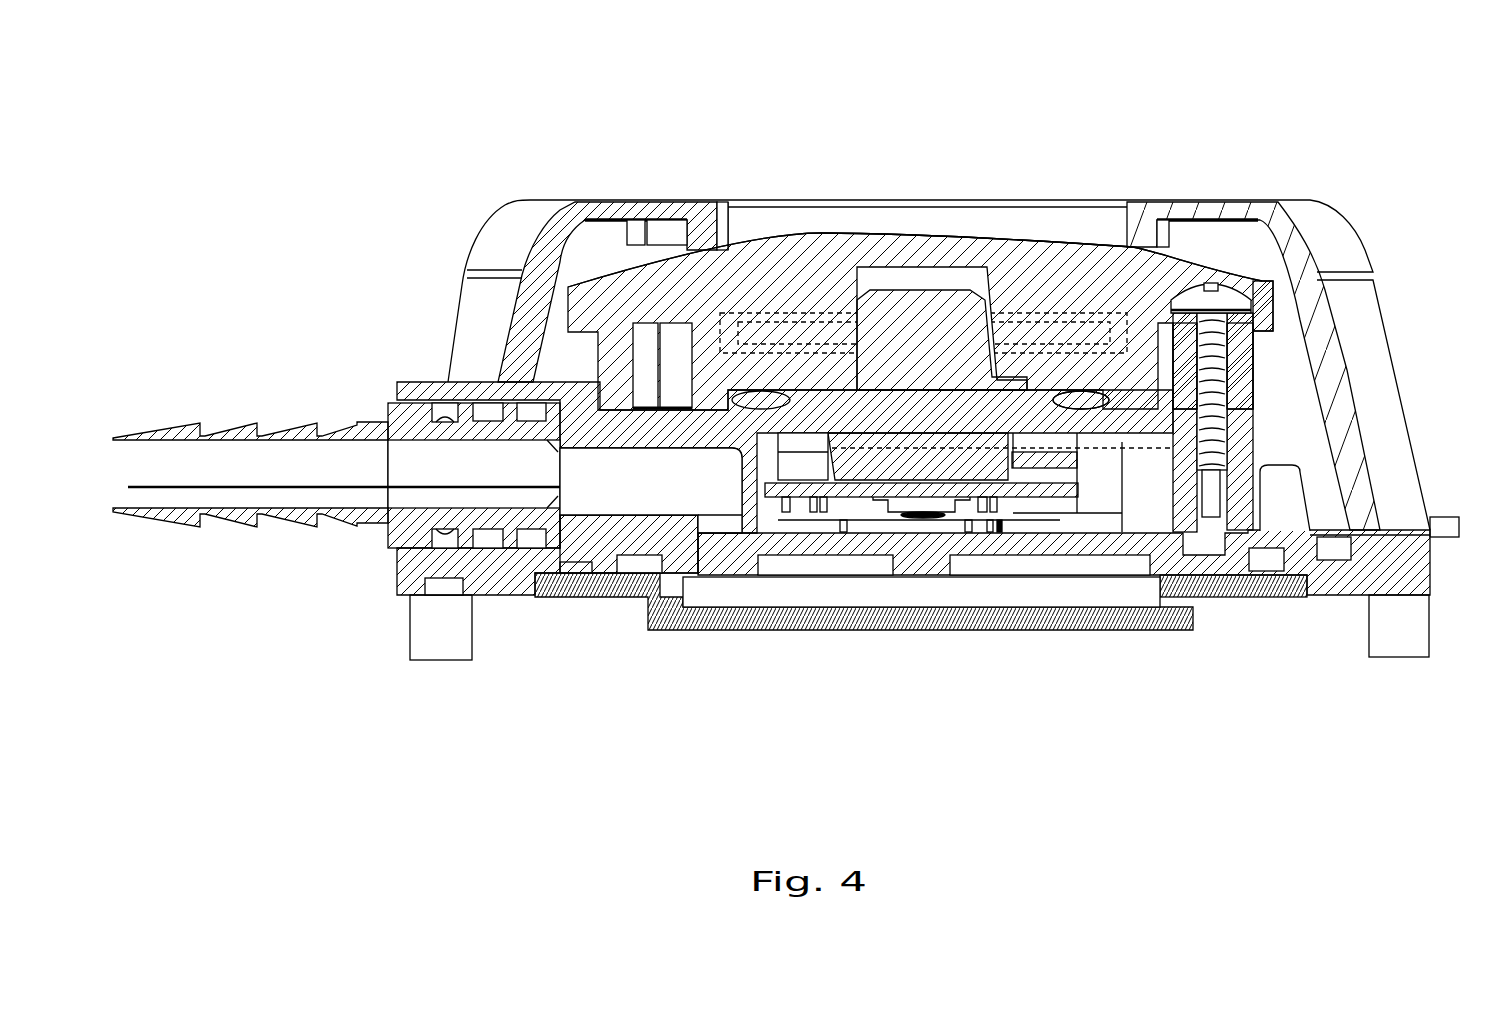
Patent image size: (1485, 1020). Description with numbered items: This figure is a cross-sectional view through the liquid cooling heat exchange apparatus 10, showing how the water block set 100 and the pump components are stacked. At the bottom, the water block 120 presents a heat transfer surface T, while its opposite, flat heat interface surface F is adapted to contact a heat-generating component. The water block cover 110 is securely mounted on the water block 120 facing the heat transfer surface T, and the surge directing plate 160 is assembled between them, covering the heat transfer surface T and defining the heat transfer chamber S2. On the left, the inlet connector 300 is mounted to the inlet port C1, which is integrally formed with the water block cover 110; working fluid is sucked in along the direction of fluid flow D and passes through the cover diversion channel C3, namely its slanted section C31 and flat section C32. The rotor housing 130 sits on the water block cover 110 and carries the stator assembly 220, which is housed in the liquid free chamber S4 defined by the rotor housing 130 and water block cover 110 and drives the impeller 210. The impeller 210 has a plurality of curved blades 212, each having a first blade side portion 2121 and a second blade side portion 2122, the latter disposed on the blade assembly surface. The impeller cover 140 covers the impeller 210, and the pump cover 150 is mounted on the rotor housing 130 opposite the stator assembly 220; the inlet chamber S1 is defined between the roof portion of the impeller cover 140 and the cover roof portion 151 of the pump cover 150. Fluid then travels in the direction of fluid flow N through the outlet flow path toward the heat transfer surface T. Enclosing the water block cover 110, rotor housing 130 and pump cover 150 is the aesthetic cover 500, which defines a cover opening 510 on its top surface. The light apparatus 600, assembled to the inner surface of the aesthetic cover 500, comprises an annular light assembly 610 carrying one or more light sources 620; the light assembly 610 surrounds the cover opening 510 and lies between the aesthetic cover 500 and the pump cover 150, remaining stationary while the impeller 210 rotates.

The liquid cooling heat exchange apparatus 10 is at (127, 76).
The water block set 100 is at (1097, 650).
The water block cover 110 is at (425, 573).
The water block 120 is at (793, 632).
The rotor housing 130 is at (1062, 390).
The impeller cover 140 is at (947, 298).
The pump cover 150 is at (805, 258).
The cover roof portion 151 is at (857, 236).
The surge directing plate 160 is at (720, 597).
The impeller 210 is at (710, 336).
The curved blades 212 is at (1110, 335).
The first blade side portion 2121 is at (1089, 300).
The second blade side portion 2122 is at (1102, 362).
The stator assembly 220 is at (1033, 492).
The inlet connector 300 is at (242, 425).
The aesthetic cover 500 is at (640, 208).
The cover opening 510 is at (728, 218).
The light apparatus 600 is at (405, 180).
The light assembly 610 is at (588, 220).
The light sources 620 is at (655, 238).
The inlet port C1 is at (678, 482).
The cover diversion channel C3 is at (543, 635).
The slanted section C31 is at (690, 527).
The flat section C32 is at (692, 547).
The direction of fluid flow D is at (487, 485).
The heat interface surface F is at (752, 638).
The direction of fluid flow N is at (833, 632).
The inlet chamber S1 is at (882, 284).
The heat transfer chamber S2 is at (967, 593).
The liquid free chamber S4 is at (860, 512).
The heat transfer surface T is at (1160, 602).